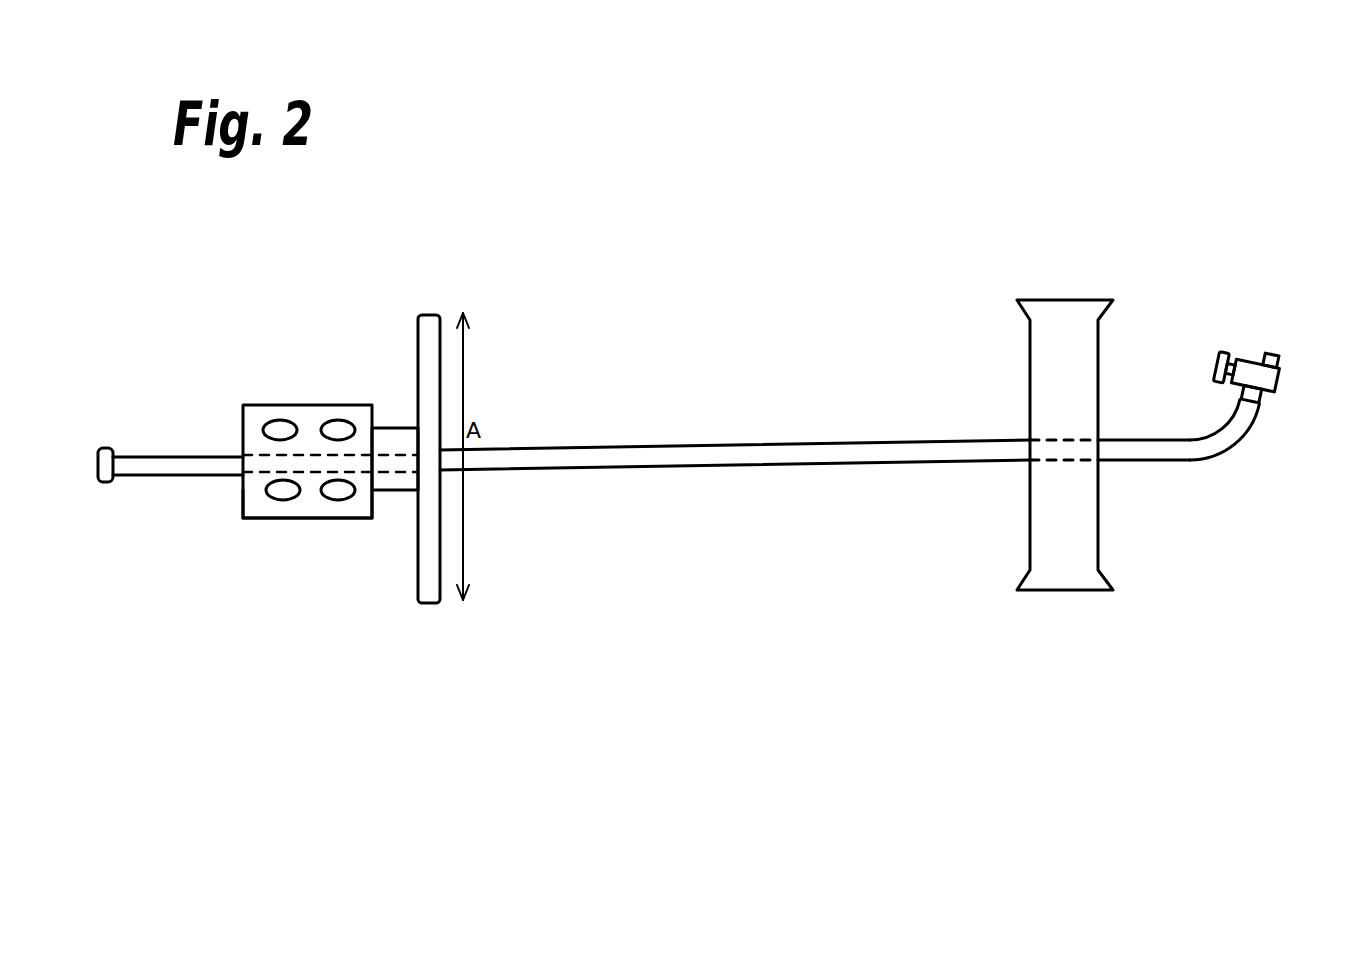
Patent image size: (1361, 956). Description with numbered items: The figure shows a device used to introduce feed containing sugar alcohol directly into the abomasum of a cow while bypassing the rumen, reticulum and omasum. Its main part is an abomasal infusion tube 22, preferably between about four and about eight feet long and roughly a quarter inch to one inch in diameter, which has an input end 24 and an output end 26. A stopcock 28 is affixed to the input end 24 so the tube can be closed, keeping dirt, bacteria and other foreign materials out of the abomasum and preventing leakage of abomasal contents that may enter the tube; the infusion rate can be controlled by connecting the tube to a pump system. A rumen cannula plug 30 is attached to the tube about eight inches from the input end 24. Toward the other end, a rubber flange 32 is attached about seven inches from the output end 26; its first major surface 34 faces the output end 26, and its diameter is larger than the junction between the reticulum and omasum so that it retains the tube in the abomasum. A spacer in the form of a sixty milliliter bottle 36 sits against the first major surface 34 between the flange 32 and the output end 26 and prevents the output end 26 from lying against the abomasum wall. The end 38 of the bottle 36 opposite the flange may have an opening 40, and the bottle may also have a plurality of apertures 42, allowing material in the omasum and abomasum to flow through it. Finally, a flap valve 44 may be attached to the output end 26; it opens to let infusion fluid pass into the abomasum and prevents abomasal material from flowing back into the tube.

The abomasal infusion tube 22 is at (757, 448).
The input end 24 is at (1237, 442).
The stopcock 28 is at (1283, 374).
The rumen cannula plug 30 is at (1068, 300).
The rubber flange 32 is at (428, 315).
The first major surface 34 is at (418, 345).
The bottle 36 is at (265, 406).
The end of the bottle 38 is at (243, 425).
The opening 40 is at (243, 490).
The apertures 42 is at (283, 498).
The output end 26 is at (128, 457).
The flap valve 44 is at (97, 470).